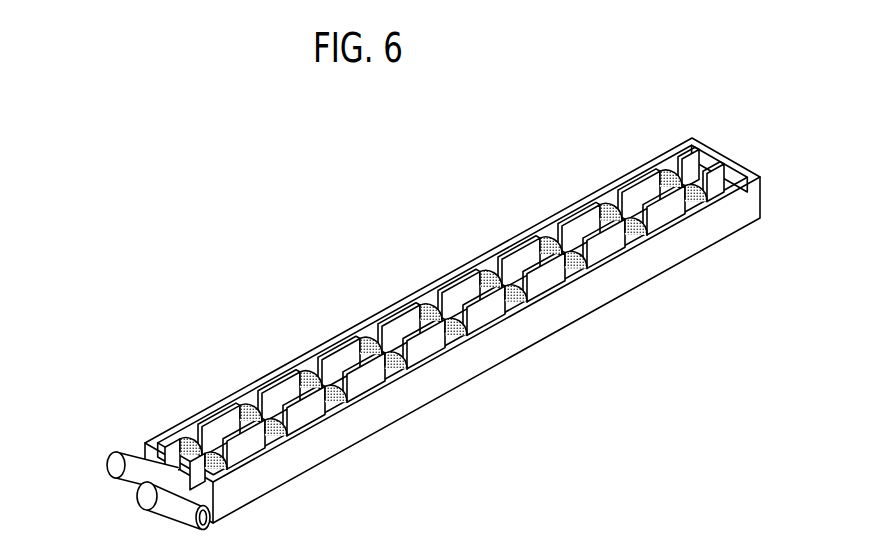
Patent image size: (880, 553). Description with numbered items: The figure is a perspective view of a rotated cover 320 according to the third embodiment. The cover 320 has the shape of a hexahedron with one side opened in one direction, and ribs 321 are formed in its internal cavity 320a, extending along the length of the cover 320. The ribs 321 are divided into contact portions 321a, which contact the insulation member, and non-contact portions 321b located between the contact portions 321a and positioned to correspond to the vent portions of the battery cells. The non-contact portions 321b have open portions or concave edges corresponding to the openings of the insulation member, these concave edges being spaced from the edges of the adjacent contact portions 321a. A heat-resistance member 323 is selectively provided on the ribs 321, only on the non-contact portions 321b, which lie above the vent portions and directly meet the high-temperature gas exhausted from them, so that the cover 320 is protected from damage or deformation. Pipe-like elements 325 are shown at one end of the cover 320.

The cover 320 is at (755, 208).
The internal cavity 320a is at (714, 180).
The ribs 321 is at (578, 99).
The contact portions 321a is at (571, 196).
The non-contact portions 321b is at (606, 184).
The heat-resistance member 323 is at (493, 271).
The coolant pipes 325 is at (130, 482).